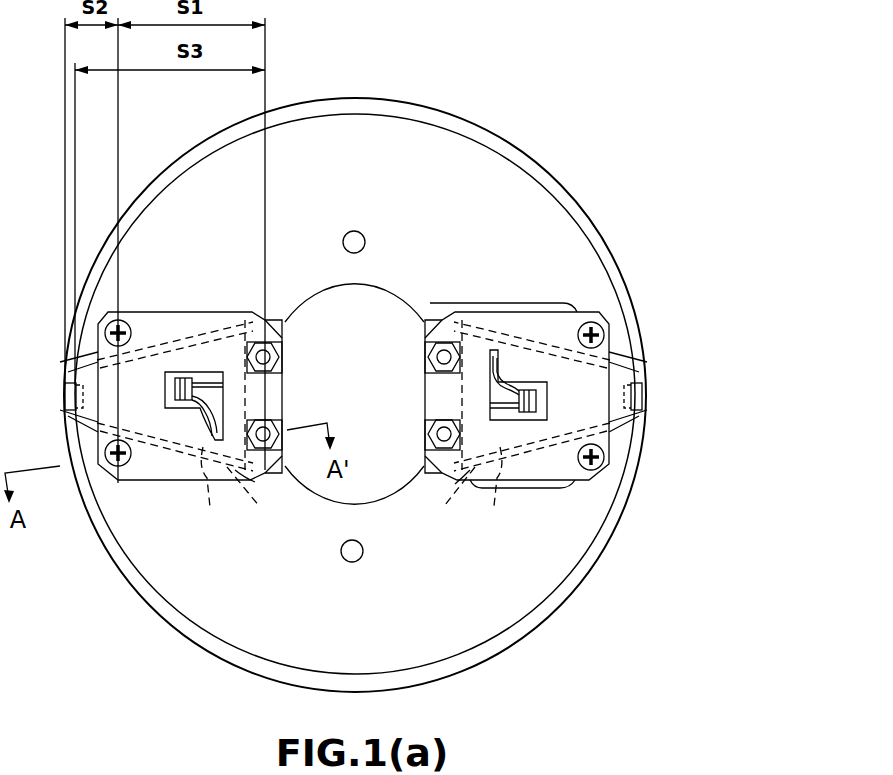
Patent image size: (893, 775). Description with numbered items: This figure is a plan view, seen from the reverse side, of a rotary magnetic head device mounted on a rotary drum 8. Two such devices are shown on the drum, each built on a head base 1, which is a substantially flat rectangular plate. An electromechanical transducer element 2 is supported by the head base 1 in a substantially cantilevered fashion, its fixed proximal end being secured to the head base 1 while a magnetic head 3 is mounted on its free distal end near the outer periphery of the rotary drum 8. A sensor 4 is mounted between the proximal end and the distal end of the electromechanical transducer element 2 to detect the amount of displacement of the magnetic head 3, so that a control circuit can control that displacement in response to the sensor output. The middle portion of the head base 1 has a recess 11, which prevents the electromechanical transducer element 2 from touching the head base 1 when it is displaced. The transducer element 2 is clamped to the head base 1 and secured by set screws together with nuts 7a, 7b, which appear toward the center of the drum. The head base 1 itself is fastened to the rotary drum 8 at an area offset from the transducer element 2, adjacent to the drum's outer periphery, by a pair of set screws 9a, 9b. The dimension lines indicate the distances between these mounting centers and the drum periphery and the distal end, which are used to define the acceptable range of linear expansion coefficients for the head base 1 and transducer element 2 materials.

The head base 1 is at (205, 312).
The electromechanical transducer element 2 is at (205, 492).
The magnetic head 3 is at (66, 396).
The sensor 4 is at (183, 378).
The nut 7a is at (282, 432).
The nut 7b is at (282, 358).
The rotary drum 8 is at (531, 160).
The set screw 9a is at (120, 485).
The set screw 9b is at (120, 320).
The recess 11 is at (250, 484).